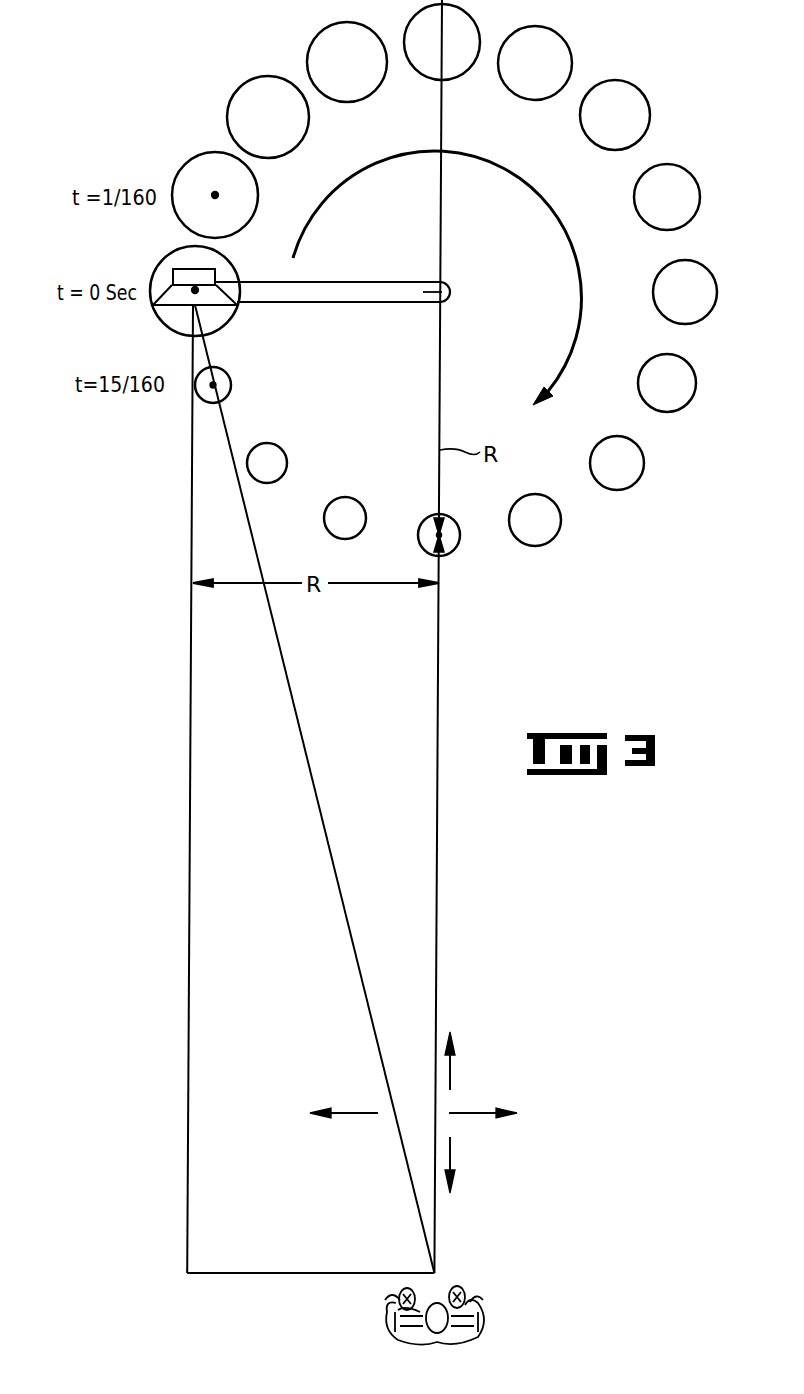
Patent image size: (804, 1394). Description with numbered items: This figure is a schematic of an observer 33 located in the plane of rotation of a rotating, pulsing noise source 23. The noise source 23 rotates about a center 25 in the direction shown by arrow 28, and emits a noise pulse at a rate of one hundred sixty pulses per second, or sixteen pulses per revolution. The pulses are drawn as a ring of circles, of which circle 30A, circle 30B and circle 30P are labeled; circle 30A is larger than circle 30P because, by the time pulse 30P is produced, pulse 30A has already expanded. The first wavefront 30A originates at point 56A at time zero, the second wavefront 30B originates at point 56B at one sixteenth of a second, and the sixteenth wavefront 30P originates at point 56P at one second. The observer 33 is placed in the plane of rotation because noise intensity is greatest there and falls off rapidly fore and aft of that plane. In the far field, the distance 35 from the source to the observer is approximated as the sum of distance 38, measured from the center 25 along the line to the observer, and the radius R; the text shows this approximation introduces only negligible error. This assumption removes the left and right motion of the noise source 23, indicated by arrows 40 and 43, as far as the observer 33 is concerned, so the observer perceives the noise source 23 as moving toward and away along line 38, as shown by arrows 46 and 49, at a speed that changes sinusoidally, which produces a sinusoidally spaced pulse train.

The noise source 23 is at (205, 269).
The center 25 is at (450, 288).
The arrow 28 is at (563, 218).
The circle 30A is at (165, 258).
The circle 30B is at (185, 160).
The circle 30P is at (232, 386).
The observer 33 is at (478, 1331).
The distance 35 is at (328, 842).
The distance 38 is at (437, 860).
The arrow 40 is at (342, 1115).
The arrow 43 is at (503, 1118).
The arrow 46 is at (450, 1068).
The arrow 49 is at (453, 1180).
The point 56A is at (193, 292).
The point 56B is at (218, 194).
The point 56P is at (216, 382).